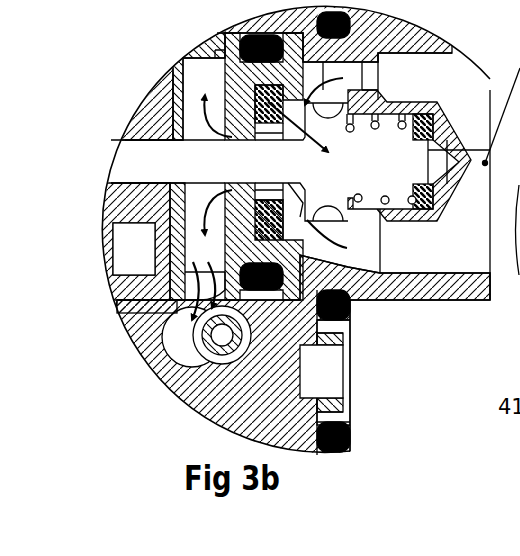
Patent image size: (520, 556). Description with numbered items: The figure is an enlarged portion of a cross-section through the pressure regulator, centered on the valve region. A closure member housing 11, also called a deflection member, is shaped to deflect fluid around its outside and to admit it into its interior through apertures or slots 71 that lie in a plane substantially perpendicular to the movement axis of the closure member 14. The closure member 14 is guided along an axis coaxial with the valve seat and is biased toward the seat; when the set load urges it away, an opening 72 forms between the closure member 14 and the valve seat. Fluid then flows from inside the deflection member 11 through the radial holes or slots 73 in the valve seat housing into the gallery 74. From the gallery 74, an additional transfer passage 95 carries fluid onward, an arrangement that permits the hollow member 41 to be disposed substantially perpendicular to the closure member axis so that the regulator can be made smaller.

The closure member housing 11 is at (460, 125).
The closure member 14 is at (223, 48).
The hollow member 41 is at (162, 382).
The slots 71 is at (305, 222).
The opening 72 is at (277, 192).
The radial holes 73 is at (198, 247).
The gallery 74 is at (187, 308).
The additional transfer passage 95 is at (197, 283).